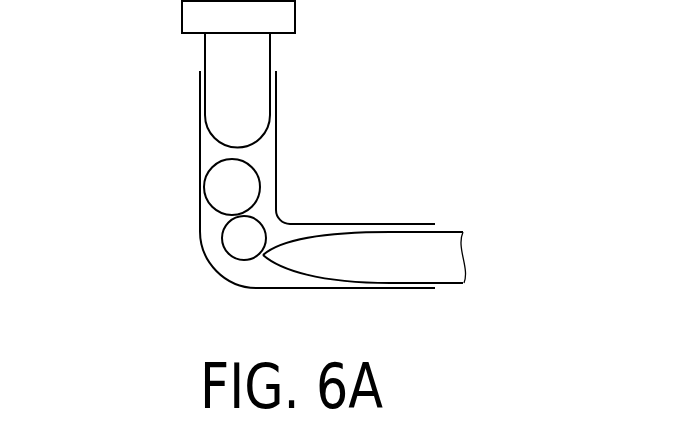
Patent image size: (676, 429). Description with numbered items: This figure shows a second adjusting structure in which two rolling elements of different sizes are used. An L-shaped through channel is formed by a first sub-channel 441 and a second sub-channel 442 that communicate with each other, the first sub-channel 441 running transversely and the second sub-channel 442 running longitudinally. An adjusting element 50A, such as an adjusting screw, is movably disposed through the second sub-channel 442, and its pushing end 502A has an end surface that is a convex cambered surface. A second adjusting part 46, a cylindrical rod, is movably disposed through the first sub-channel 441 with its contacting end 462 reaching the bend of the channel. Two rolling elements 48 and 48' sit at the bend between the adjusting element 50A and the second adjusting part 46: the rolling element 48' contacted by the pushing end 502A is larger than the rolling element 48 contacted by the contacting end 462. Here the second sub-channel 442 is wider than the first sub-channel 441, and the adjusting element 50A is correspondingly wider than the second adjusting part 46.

The adjusting element 50A is at (245, 52).
The pushing end 502A is at (276, 158).
The second sub-channel 442 is at (200, 157).
The contacting end 462 is at (280, 218).
The first sub-channel 441 is at (267, 275).
The rolling element 48' is at (164, 190).
The rolling element 48 is at (187, 247).
The second adjusting part 46 is at (443, 257).